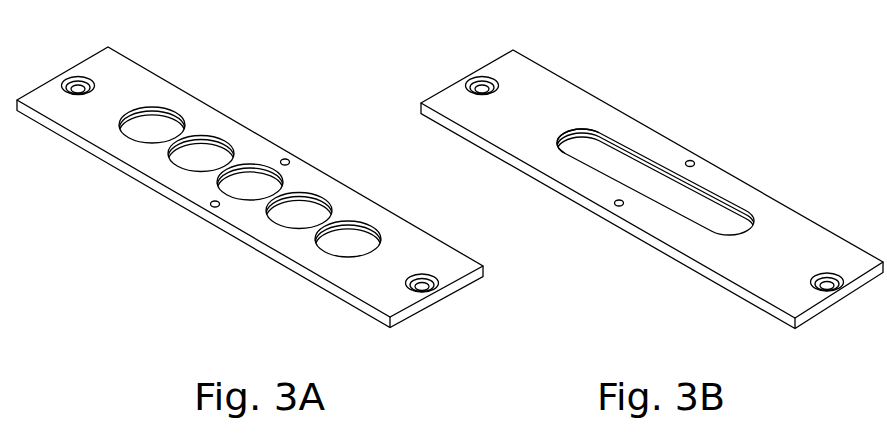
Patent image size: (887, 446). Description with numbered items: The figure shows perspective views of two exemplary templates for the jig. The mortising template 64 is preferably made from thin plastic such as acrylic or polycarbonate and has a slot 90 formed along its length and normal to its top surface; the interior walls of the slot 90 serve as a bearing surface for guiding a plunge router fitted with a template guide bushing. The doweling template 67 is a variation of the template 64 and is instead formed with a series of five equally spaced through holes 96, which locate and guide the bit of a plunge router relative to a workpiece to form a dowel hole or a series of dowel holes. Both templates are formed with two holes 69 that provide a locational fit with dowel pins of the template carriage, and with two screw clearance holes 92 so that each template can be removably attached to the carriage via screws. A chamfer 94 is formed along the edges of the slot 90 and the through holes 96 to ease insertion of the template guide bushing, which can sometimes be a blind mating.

In FIG. 3A, the doweling template 67 is at (108, 47).
In FIG. 3B, the template 64 is at (513, 50).
In FIG. 3A, the screw clearance holes 92 is at (94, 85).
In FIG. 3B, the screw clearance holes 92 is at (498, 84).
In FIG. 3A, the chamfer 94 is at (170, 107).
In FIG. 3B, the chamfer 94 is at (565, 132).
In FIG. 3A, the through holes 96 is at (184, 134).
In FIG. 3B, the slot 90 is at (593, 125).
In FIG. 3A, the holes 69 is at (290, 158).
In FIG. 3B, the holes 69 is at (697, 162).